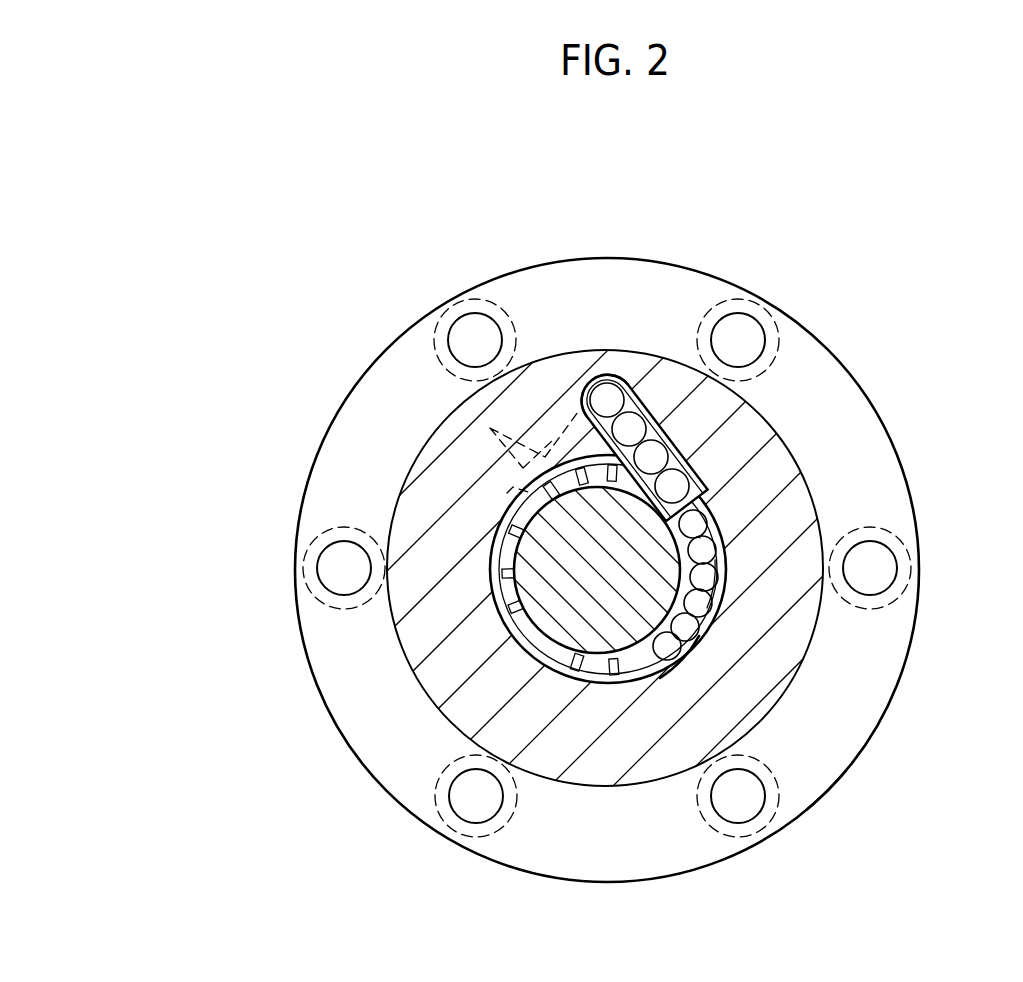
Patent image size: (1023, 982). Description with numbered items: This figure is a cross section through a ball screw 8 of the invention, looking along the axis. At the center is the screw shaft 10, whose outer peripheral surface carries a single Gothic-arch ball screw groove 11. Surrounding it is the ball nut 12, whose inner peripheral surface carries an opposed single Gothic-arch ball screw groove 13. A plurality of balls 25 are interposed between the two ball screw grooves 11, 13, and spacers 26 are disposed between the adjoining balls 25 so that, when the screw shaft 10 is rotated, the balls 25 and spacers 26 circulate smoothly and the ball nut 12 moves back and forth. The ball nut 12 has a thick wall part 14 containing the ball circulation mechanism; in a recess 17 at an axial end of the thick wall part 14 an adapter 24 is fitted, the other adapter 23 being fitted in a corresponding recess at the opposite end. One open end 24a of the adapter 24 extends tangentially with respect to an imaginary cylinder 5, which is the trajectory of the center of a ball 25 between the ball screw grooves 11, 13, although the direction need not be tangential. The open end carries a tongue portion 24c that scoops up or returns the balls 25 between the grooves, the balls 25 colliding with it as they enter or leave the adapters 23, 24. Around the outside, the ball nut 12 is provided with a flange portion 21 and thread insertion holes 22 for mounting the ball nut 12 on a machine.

The ball screw 8 is at (753, 227).
The screw shaft 10 is at (550, 603).
The ball screw groove 11 is at (709, 579).
The ball nut 12 is at (813, 803).
The ball screw groove 13 is at (680, 645).
The thick wall part 14 is at (417, 635).
The recess 17 is at (627, 413).
The flange portion 21 is at (322, 470).
The thread insertion hole 22 is at (330, 568).
The adapter 23 is at (545, 457).
The adapter 24 is at (660, 440).
The open end 24a is at (690, 470).
The tongue portion 24c is at (573, 413).
The ball 25 is at (707, 527).
The spacer 26 is at (690, 507).
The imaginary cylinder 5 is at (690, 598).